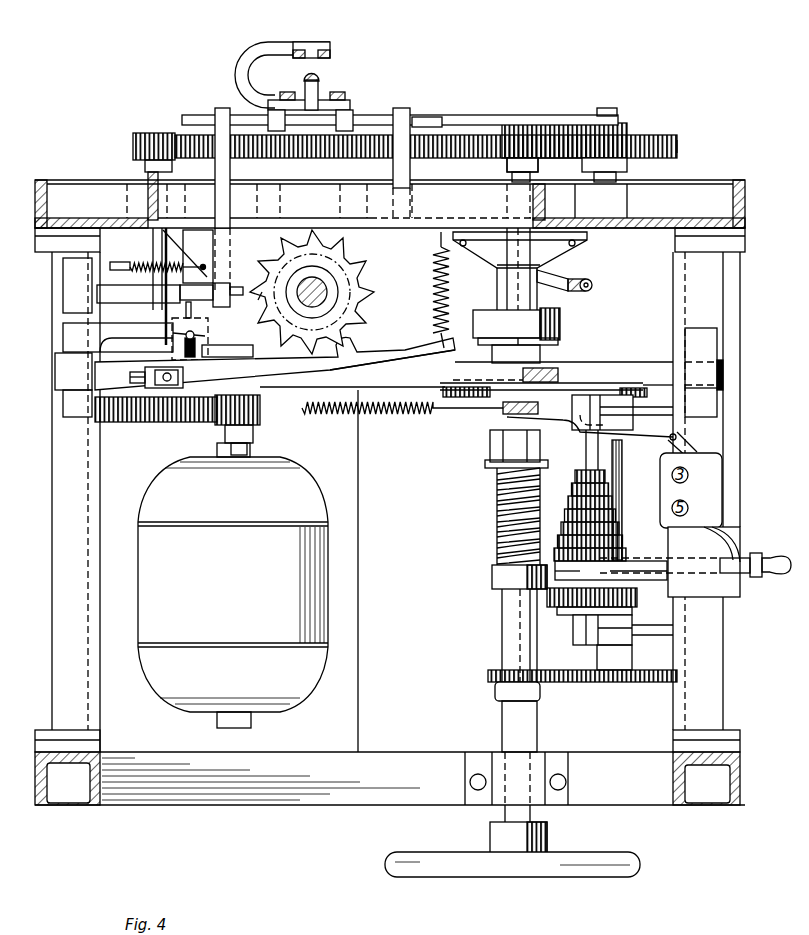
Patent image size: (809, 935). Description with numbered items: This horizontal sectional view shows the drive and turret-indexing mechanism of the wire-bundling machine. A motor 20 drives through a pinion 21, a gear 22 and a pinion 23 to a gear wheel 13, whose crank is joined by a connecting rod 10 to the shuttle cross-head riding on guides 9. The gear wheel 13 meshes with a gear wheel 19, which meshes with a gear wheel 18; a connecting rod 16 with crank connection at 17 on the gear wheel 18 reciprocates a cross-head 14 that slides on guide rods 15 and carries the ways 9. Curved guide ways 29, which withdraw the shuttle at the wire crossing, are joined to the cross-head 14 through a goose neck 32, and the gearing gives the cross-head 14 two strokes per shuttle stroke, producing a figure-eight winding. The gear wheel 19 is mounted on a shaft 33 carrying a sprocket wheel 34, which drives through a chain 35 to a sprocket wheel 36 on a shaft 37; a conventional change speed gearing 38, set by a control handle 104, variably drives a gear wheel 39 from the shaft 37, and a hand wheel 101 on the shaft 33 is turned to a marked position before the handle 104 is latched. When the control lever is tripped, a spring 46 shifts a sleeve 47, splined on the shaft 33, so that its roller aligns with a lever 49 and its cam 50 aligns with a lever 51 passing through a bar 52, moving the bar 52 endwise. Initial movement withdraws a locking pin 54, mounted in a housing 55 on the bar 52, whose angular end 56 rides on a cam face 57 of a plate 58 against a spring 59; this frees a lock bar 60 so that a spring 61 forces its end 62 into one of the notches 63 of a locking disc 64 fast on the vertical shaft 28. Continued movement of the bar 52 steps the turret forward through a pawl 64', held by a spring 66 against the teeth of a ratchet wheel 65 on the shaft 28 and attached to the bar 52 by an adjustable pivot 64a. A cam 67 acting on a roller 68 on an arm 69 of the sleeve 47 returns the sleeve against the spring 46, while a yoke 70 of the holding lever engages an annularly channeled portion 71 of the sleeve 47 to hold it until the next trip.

The guides 9 is at (281, 92).
The connecting rod 10 is at (320, 80).
The gear wheel 13 is at (200, 115).
The cross-head 14 is at (372, 112).
The guide rods 15 is at (430, 120).
The connecting rod 16 is at (533, 115).
The crank connection 17 is at (607, 108).
The gear wheel 18 is at (680, 145).
The gear wheel 19 is at (466, 140).
The motor 20 is at (233, 585).
The pinion 21 is at (257, 428).
The gear 22 is at (181, 422).
The pinion 23 is at (146, 133).
The vertical shaft 28 is at (325, 285).
The curved guide ways 29 is at (305, 44).
The goose neck 32 is at (243, 52).
The shaft 33 is at (512, 176).
The sprocket wheel 34 is at (496, 672).
The chain 35 is at (541, 686).
The sprocket wheel 36 is at (616, 682).
The shaft 37 is at (597, 660).
The change speed gearing 38 is at (605, 508).
The gear wheel 39 is at (470, 400).
The spring 46 is at (497, 545).
The sleeve 47 is at (490, 453).
The lever 49 is at (507, 417).
The cam 50 is at (580, 393).
The lever 51 is at (553, 368).
The bar 52 is at (652, 364).
The locking pin 54 is at (191, 307).
The housing 55 is at (206, 330).
The angular end 56 is at (213, 345).
The cam face 57 is at (173, 333).
The plate 58 is at (122, 342).
The spring 59 is at (194, 352).
The lock bar 60 is at (163, 295).
The spring 61 is at (158, 255).
The end 62 is at (240, 286).
The notches 63 is at (260, 296).
The locking disc 64 is at (275, 363).
The pawl 64' is at (365, 378).
The adjustable pivot 64a is at (168, 390).
The ratchet wheel 65 is at (340, 276).
The spring 66 is at (436, 297).
The cam 67 is at (578, 252).
The roller 68 is at (592, 286).
The arm 69 is at (562, 288).
The yoke 70 is at (562, 322).
The annularly channeled portion 71 is at (484, 342).
The hand wheel 101 is at (421, 860).
The control handle 104 is at (773, 556).